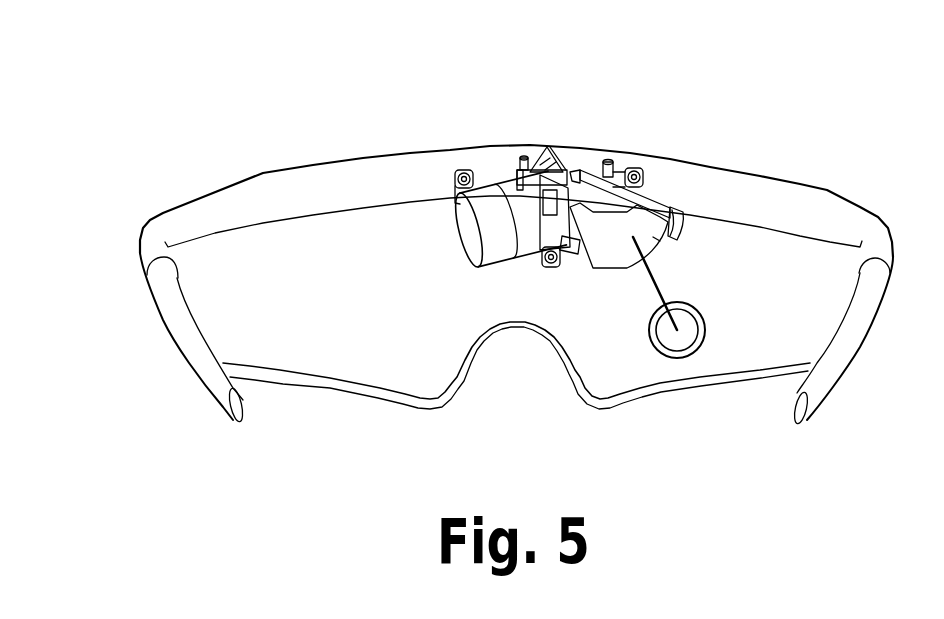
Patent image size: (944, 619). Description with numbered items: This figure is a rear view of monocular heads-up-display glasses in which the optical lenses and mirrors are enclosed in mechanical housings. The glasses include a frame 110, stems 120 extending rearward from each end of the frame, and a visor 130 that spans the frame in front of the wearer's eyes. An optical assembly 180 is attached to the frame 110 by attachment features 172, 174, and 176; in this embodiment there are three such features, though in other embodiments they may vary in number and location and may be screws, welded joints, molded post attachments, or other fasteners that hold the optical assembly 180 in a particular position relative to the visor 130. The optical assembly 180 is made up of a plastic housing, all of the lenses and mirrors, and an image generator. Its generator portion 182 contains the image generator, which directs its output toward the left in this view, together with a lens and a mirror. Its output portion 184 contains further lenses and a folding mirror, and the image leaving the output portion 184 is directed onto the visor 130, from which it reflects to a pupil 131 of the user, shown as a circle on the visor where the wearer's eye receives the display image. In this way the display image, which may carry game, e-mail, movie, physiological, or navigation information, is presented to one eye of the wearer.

The frame 110 is at (260, 178).
The stems 120 is at (162, 323).
The visor 130 is at (787, 311).
The pupil 131 is at (700, 342).
The attachment feature 172 is at (452, 170).
The attachment feature 174 is at (541, 266).
The attachment feature 176 is at (647, 177).
The optical assembly 180 is at (626, 164).
The generator portion 182 is at (547, 147).
The output portion 184 is at (668, 242).